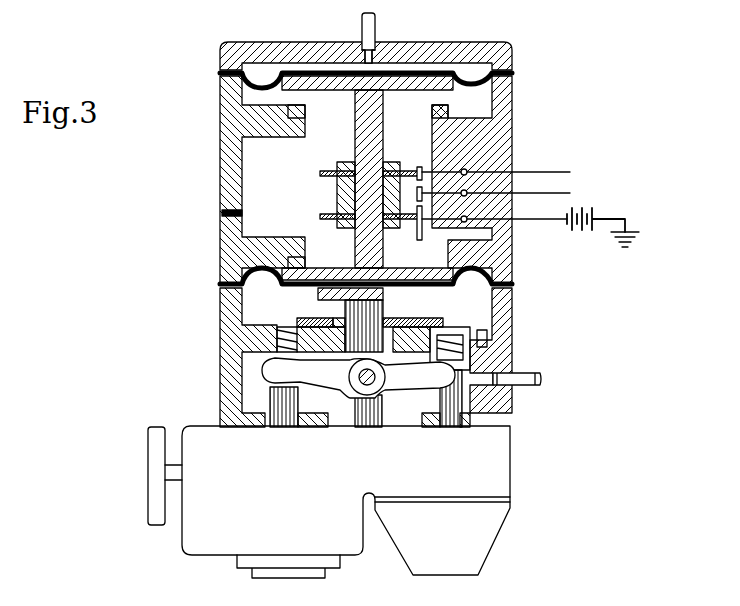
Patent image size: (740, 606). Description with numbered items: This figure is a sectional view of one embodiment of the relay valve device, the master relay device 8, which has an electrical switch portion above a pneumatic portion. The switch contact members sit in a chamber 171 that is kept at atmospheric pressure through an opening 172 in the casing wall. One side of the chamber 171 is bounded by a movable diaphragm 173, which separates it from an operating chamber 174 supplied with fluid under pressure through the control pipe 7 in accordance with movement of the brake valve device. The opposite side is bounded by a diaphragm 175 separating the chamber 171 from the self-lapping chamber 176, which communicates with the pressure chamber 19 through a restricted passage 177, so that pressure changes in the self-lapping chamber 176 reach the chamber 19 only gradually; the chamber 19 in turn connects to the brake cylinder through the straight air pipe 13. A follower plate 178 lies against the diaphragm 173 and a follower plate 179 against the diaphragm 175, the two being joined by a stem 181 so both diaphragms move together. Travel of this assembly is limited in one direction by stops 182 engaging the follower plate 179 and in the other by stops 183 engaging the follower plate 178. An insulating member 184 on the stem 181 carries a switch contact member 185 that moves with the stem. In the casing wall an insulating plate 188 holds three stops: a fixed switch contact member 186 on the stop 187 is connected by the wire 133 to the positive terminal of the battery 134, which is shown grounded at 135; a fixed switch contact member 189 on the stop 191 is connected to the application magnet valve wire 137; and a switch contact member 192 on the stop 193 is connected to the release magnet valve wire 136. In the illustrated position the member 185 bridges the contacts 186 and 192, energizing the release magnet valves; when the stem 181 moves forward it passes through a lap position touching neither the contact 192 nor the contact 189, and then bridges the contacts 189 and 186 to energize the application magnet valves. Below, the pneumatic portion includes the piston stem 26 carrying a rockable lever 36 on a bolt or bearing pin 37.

The control pipe 7 is at (376, 28).
The master relay device 8 is at (520, 111).
The straight air pipe 13 is at (520, 386).
The pressure chamber 19 is at (480, 362).
The piston stem 26 is at (343, 318).
The rockable lever 36 is at (412, 380).
The bearing pin 37 is at (358, 383).
The wire 133 is at (518, 220).
The battery 134 is at (583, 232).
The ground 135 is at (640, 237).
The release magnet valve wire 136 is at (518, 173).
The application magnet valve wire 137 is at (518, 194).
The chamber 171 is at (250, 185).
The opening 172 is at (228, 214).
The movable diaphragm 173 is at (440, 70).
The diaphragm 174 is at (312, 70).
The diaphragm 175 is at (493, 281).
The self-lapping chamber 176 is at (486, 305).
The restricted passage 177 is at (489, 332).
The follower plate 178 is at (392, 92).
The follower plate 179 is at (392, 274).
The stem 181 is at (384, 136).
The stops 182 is at (303, 258).
The stops 183 is at (300, 116).
The insulating member 184 is at (345, 162).
The switch contact member 185 is at (322, 201).
The fixed switch contact member 186 is at (420, 229).
The stop 187 is at (466, 221).
The insulating plate 188 is at (450, 165).
The fixed switch contact member 189 is at (450, 205).
The stop 191 is at (468, 192).
The switch contact member 192 is at (420, 167).
The stop 193 is at (466, 172).